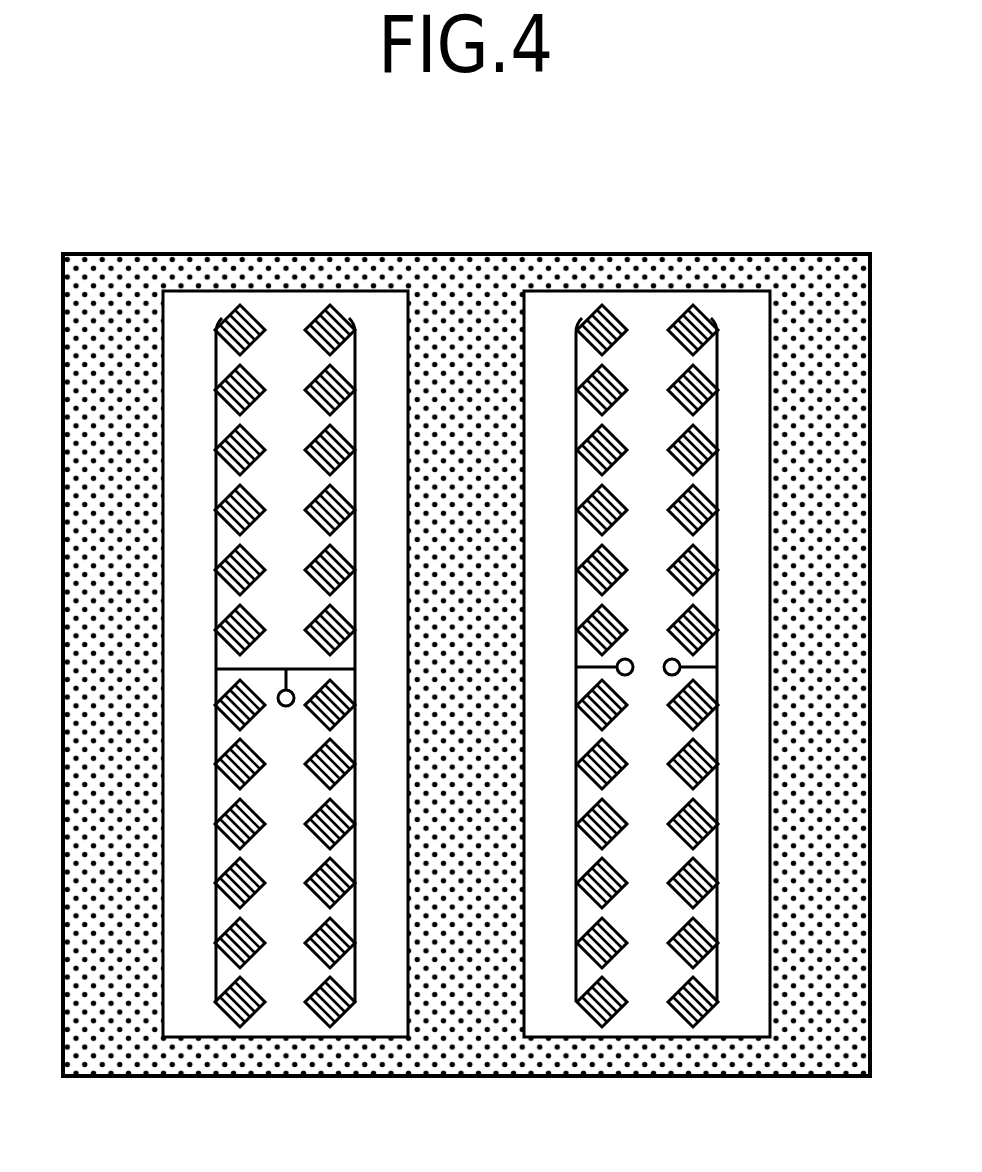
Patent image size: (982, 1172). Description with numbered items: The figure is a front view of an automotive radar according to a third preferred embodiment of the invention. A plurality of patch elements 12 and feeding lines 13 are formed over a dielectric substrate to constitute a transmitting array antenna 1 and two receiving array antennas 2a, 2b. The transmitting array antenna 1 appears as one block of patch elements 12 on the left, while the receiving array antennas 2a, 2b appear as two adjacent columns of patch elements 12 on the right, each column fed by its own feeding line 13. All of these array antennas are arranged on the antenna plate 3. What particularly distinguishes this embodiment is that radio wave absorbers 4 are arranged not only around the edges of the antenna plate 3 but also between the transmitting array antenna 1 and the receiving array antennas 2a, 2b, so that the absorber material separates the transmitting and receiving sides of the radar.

The transmitting array antenna 1 is at (287, 730).
The receiving array antenna 2a is at (555, 1081).
The receiving array antenna 2b is at (658, 1081).
The antenna plate 3 is at (738, 308).
The radio wave absorber 4 is at (203, 256).
The patch element 12 is at (260, 563).
The feeding line 13 is at (267, 666).